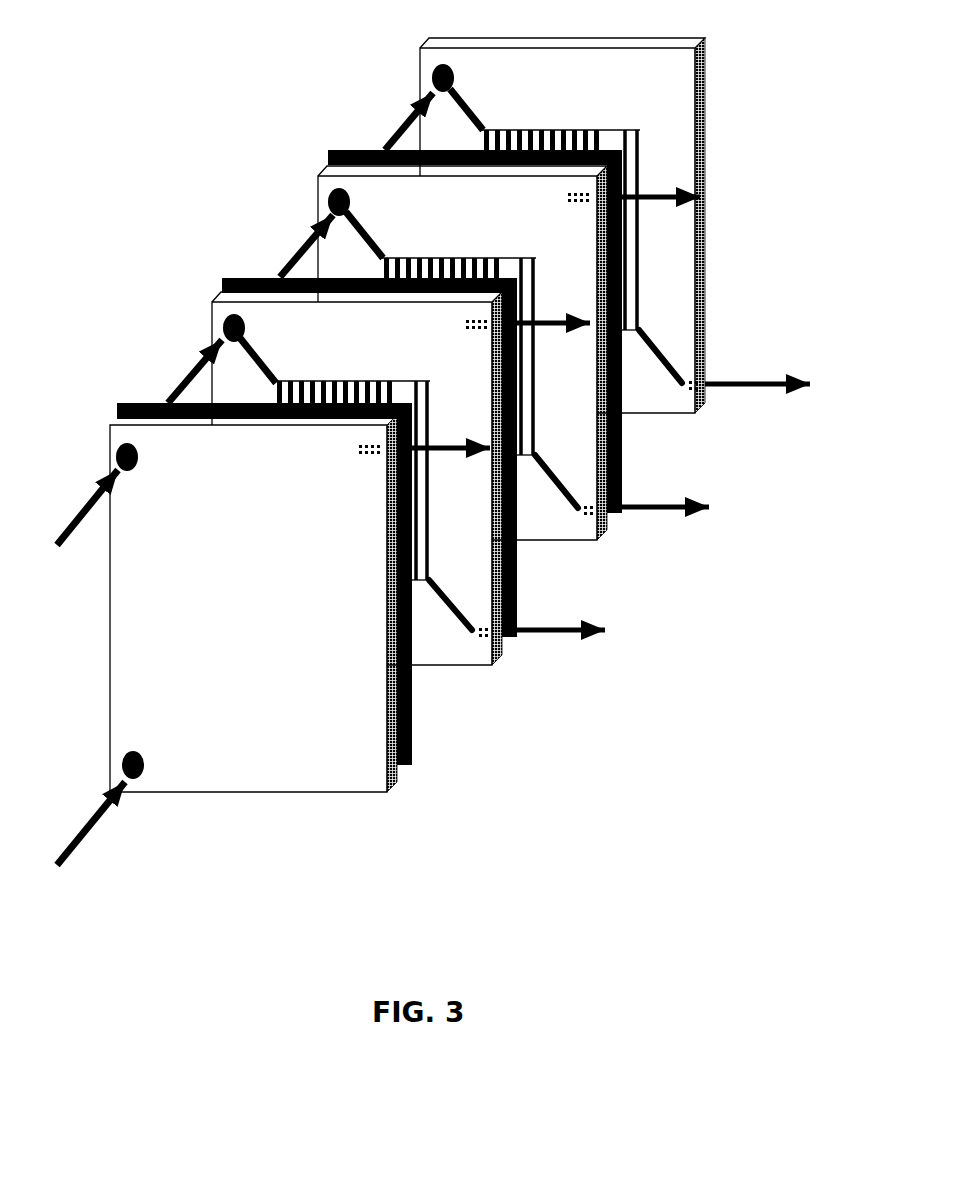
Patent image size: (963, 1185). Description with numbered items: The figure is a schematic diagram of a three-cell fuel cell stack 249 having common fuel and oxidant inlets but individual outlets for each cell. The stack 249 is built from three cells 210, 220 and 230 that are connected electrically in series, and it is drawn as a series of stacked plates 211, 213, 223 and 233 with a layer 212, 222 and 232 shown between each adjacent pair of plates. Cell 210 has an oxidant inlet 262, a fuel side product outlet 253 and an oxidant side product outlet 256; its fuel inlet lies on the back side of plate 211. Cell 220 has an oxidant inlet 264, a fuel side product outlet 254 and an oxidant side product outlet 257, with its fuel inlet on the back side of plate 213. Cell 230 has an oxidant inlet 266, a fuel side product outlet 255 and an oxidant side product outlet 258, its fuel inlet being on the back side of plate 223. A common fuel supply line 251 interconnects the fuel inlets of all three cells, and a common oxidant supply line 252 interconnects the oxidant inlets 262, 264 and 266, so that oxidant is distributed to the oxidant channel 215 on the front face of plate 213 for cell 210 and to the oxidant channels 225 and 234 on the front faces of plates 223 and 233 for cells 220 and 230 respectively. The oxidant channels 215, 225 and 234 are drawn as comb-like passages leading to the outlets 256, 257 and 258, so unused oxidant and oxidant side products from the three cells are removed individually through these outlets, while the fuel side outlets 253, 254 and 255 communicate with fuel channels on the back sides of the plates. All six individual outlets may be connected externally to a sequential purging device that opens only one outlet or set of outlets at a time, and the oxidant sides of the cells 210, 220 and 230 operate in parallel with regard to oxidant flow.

The cell 210 is at (180, 309).
The plate 211 is at (253, 603).
The first spacer frame 212 is at (414, 740).
The plate 213 is at (357, 478).
The oxidant channel 215 is at (440, 537).
The cell 220 is at (281, 171).
The second spacer frame 222 is at (520, 603).
The plate 223 is at (462, 353).
The oxidant channels 225 is at (543, 426).
The cell 230 is at (383, 41).
The third spacer frame 232 is at (624, 478).
The plate 233 is at (615, 225).
The oxidant channels 234 is at (645, 292).
The three-cell fuel cell stack 249 is at (808, 32).
The common fuel supply line 251 is at (70, 837).
The common oxidant supply line 252 is at (68, 515).
The fuel side product outlet 253 is at (368, 463).
The fuel side product outlet 254 is at (462, 327).
The fuel side product outlet 255 is at (562, 201).
The oxidant side product outlet 256 is at (485, 645).
The oxidant side product outlet 257 is at (587, 522).
The oxidant side product outlet 258 is at (692, 399).
The oxidant inlet 262 is at (266, 356).
The oxidant inlet 264 is at (375, 237).
The oxidant inlet 266 is at (471, 103).